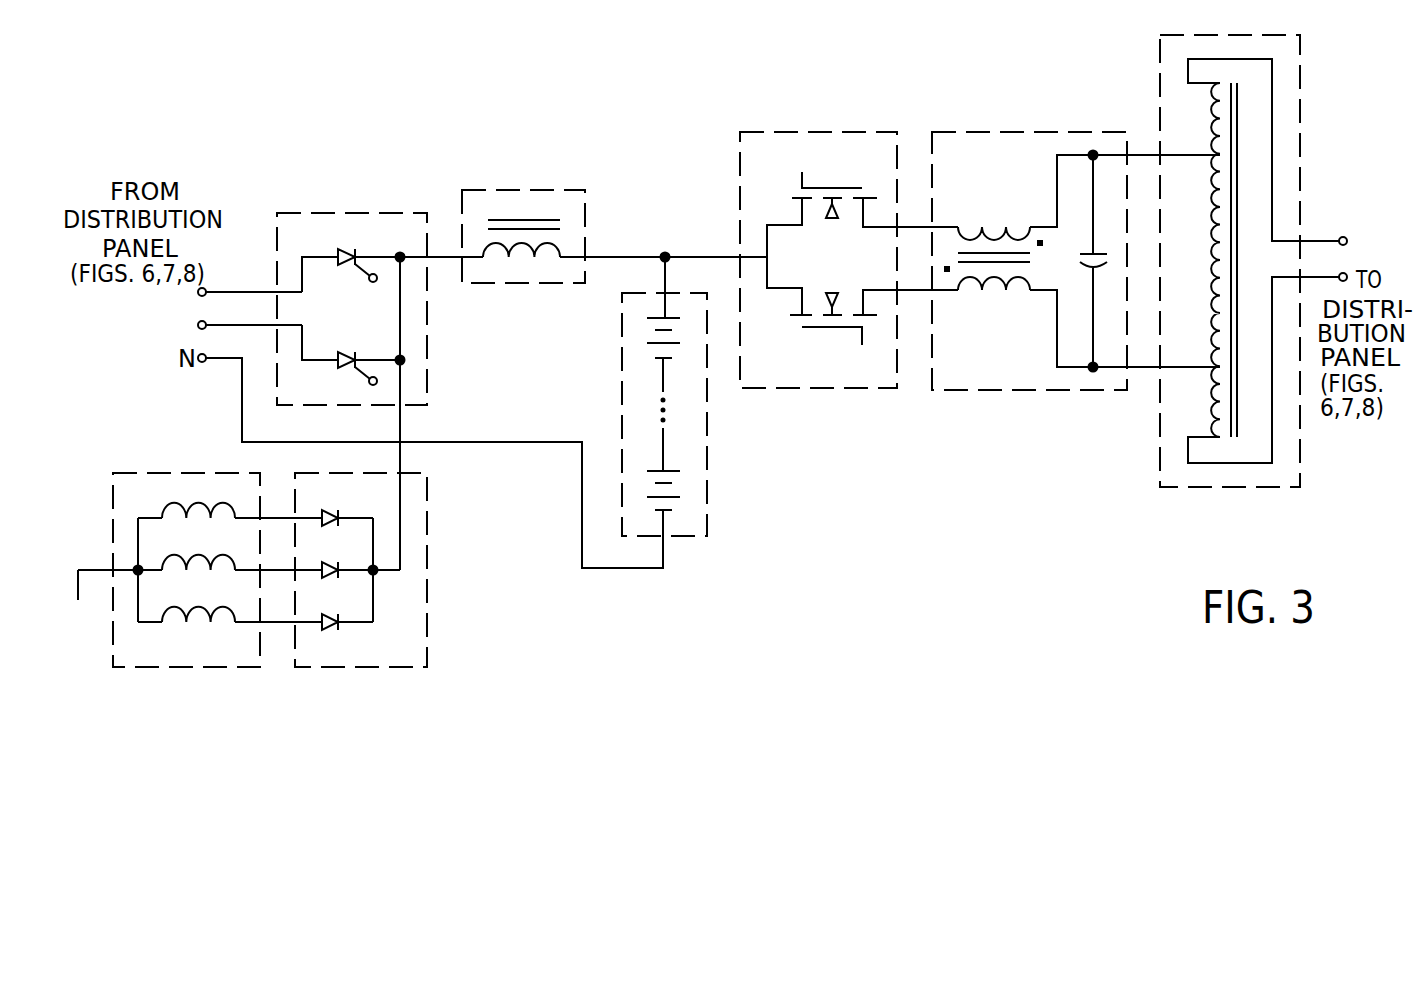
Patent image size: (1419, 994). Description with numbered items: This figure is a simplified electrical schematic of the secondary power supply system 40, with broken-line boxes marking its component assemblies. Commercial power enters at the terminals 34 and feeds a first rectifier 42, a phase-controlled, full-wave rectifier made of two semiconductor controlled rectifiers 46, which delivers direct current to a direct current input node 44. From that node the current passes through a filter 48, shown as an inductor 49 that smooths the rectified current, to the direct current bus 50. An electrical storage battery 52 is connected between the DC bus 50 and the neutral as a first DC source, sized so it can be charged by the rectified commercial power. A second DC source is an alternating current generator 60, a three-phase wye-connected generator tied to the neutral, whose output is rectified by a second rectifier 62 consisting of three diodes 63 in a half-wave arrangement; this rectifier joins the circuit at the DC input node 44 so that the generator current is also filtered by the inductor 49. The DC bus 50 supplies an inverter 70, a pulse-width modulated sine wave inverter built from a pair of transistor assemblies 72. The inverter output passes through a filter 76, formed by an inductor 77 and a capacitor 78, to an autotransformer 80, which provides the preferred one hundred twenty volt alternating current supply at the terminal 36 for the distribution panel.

The terminals 34 is at (198, 325).
The terminal 36 is at (1347, 273).
The secondary power supply system 40 is at (780, 563).
The first rectifier 42 is at (325, 213).
The direct current input node 44 is at (400, 255).
The semiconductor controlled rectifiers 46 is at (345, 350).
The filter 48 is at (515, 190).
The inductor 49 is at (515, 262).
The direct current bus 50 is at (665, 255).
The electrical storage battery 52 is at (707, 420).
The alternating current generator 60 is at (197, 667).
The second rectifier 62 is at (367, 667).
The diodes 63 is at (338, 567).
The inverter 70 is at (796, 132).
The transistor assemblies 72 is at (836, 188).
The filter 76 is at (993, 132).
The inductor 77 is at (970, 291).
The capacitor 78 is at (1084, 254).
The autotransformer 80 is at (1160, 100).